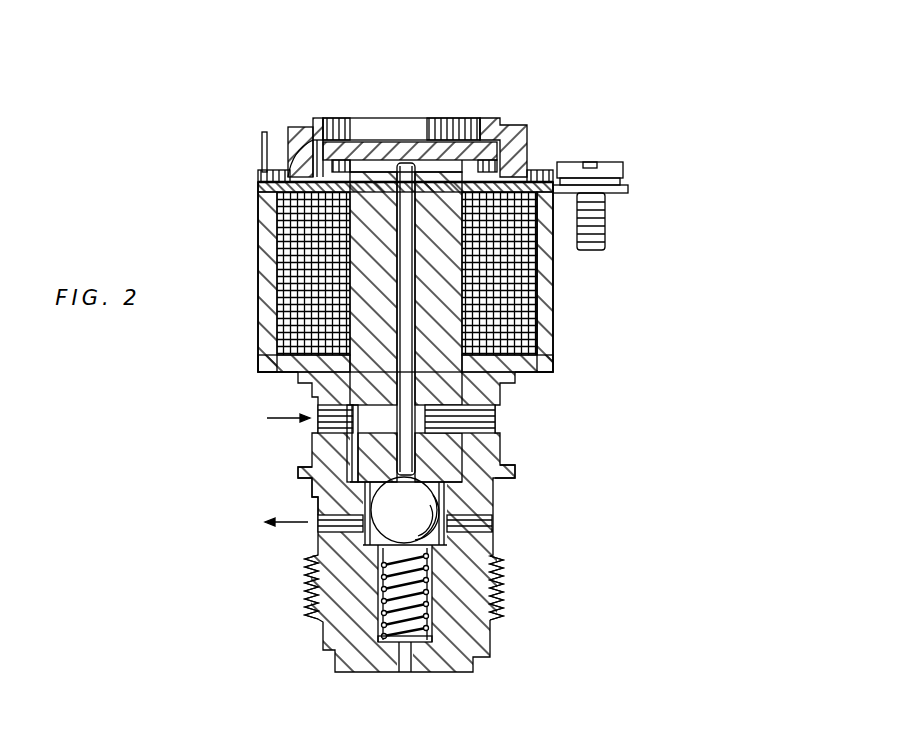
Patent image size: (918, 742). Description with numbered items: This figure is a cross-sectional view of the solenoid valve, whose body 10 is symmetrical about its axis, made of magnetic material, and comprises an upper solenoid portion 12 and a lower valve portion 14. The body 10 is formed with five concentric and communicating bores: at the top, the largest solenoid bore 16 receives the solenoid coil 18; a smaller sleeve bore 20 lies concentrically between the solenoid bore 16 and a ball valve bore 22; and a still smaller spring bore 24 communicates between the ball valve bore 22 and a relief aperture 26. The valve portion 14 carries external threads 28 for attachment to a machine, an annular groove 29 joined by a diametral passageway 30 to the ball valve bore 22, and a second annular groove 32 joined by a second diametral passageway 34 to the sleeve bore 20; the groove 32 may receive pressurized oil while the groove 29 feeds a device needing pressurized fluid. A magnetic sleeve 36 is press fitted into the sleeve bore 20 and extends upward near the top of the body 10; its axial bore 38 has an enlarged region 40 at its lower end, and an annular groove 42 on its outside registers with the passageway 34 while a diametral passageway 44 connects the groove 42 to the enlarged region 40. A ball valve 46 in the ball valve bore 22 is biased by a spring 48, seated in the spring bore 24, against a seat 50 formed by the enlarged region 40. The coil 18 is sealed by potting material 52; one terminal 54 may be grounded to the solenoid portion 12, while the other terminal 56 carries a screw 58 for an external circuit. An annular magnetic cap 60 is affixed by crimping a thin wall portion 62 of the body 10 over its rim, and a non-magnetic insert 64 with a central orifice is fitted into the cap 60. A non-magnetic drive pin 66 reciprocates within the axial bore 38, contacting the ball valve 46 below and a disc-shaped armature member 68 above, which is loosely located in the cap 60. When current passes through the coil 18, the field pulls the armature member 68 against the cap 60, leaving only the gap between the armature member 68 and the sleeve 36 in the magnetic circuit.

The solenoid valve body 10 is at (562, 364).
The upper solenoid portion 12 is at (553, 283).
The lower valve portion 14 is at (493, 530).
The solenoid bore 16 is at (528, 308).
The solenoid coil 18 is at (522, 258).
The sleeve bore 20 is at (500, 385).
The ball valve bore 22 is at (507, 483).
The spring bore 24 is at (432, 633).
The relief aperture 26 is at (405, 652).
The threads 28 is at (495, 590).
The annular groove 29 is at (317, 503).
The diametral passageway 30 is at (348, 530).
The second annular groove 32 is at (313, 450).
The second diametral passageway 34 is at (327, 410).
The sleeve 36 is at (357, 287).
The axial bore 38 is at (418, 297).
The enlarged region 40 is at (387, 462).
The annular groove 42 is at (460, 420).
The diametral passageway 44 is at (477, 450).
The ball valve 46 is at (317, 607).
The spring 48 is at (432, 600).
The seat 50 is at (440, 520).
The potting material 52 is at (300, 143).
The terminal 54 is at (258, 188).
The terminal 56 is at (628, 192).
The screw 58 is at (627, 165).
The annular cap 60 is at (527, 133).
The thin wall portion 62 is at (290, 165).
The insert 64 is at (332, 128).
The drive pin 66 is at (393, 243).
The armature member 68 is at (458, 138).